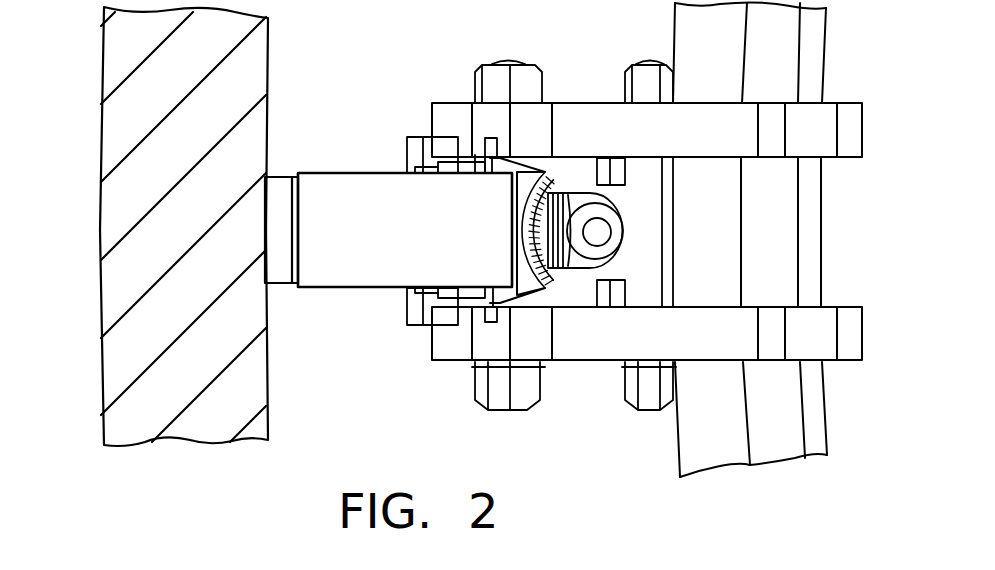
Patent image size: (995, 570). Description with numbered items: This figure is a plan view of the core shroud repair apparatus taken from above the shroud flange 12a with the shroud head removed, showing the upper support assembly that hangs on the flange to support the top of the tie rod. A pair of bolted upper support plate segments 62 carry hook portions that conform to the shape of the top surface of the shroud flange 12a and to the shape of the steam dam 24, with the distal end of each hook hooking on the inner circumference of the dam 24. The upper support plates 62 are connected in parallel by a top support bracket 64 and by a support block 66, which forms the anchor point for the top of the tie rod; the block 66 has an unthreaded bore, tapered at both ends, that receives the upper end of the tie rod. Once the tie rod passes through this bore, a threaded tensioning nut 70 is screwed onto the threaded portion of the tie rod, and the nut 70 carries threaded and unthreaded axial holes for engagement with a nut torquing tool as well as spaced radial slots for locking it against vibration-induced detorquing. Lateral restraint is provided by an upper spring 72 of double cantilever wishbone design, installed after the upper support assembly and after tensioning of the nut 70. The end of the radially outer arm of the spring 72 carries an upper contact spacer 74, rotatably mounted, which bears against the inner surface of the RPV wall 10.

The RPV wall 10 is at (98, 303).
The shroud flange 12a is at (790, 62).
The steam dam 24 is at (815, 407).
The upper support plate segments 62 is at (692, 145).
The top support bracket 64 is at (664, 198).
The support block 66 is at (528, 290).
The tensioning nut 70 is at (518, 276).
The upper spring 72 is at (386, 235).
The upper contact spacer 74 is at (277, 273).